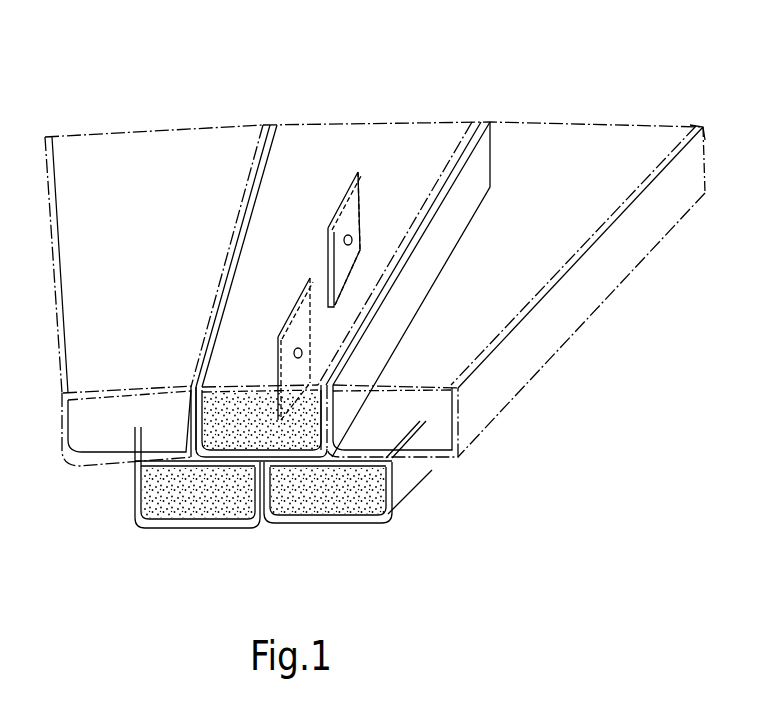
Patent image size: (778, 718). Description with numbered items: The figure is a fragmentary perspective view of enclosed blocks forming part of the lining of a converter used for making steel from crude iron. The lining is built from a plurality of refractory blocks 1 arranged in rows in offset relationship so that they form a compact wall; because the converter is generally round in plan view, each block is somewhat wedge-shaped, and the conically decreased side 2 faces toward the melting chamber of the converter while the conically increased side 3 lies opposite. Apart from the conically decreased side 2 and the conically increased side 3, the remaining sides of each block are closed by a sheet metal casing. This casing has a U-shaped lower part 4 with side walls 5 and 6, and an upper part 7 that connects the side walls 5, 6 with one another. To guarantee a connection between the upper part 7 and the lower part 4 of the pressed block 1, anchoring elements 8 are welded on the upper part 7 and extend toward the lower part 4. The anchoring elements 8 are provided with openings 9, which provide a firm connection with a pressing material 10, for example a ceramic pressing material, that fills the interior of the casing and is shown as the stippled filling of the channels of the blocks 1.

The refractory block 1 is at (163, 114).
The conically decreased side 2 is at (117, 444).
The conically increased side 3 is at (670, 125).
The U-shaped lower part 4 is at (527, 383).
The side wall 5 is at (593, 288).
The side wall 6 is at (480, 167).
The upper part 7 is at (306, 195).
The anchoring element 8 is at (353, 208).
The opening 9 is at (355, 236).
The pressing material 10 is at (256, 441).